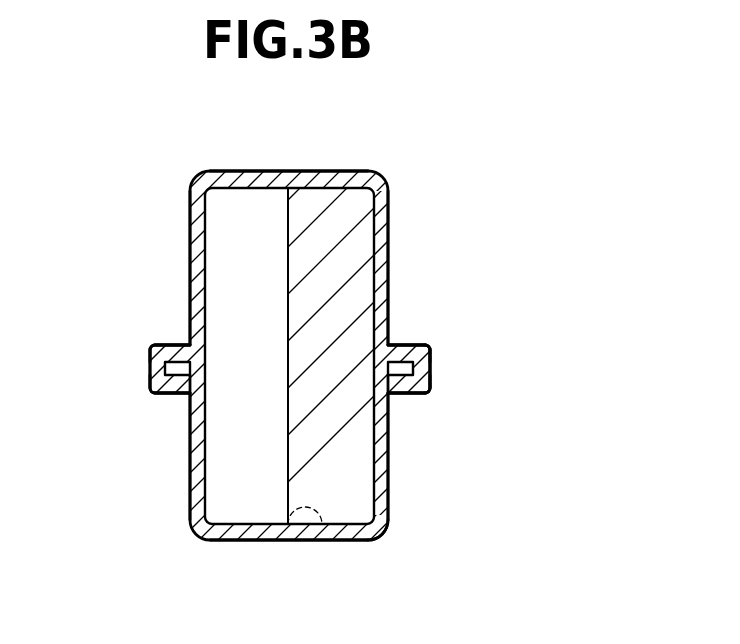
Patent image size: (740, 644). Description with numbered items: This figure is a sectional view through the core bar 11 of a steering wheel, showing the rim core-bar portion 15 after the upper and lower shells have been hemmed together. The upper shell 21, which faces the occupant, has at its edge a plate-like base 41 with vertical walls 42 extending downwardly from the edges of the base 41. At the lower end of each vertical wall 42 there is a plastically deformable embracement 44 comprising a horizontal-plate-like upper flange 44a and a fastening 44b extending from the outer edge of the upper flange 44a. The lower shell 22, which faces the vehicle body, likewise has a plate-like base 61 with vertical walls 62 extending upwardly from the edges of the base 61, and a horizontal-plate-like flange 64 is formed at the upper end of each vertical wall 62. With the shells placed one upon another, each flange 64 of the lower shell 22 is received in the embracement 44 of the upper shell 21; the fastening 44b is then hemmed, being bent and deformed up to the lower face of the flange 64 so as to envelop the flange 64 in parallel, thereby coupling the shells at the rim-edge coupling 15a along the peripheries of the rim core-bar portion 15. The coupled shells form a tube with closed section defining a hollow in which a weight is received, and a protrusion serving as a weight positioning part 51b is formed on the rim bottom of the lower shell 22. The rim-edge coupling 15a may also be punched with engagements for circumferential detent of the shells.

The core bar 11 is at (403, 174).
The rim core-bar portion 15 is at (390, 218).
The upper shell 21 is at (361, 178).
The base 41 is at (263, 172).
The vertical wall 42 is at (190, 258).
The vertical wall 62 is at (190, 494).
The base 61 is at (248, 541).
The lower shell 22 is at (377, 541).
The weight positioning part 51b is at (298, 527).
The embracement 44 is at (163, 395).
The upper flange 44a is at (163, 345).
The fastening 44b is at (158, 395).
The flange 64 is at (178, 377).
The rim-edge coupling 15a is at (431, 370).